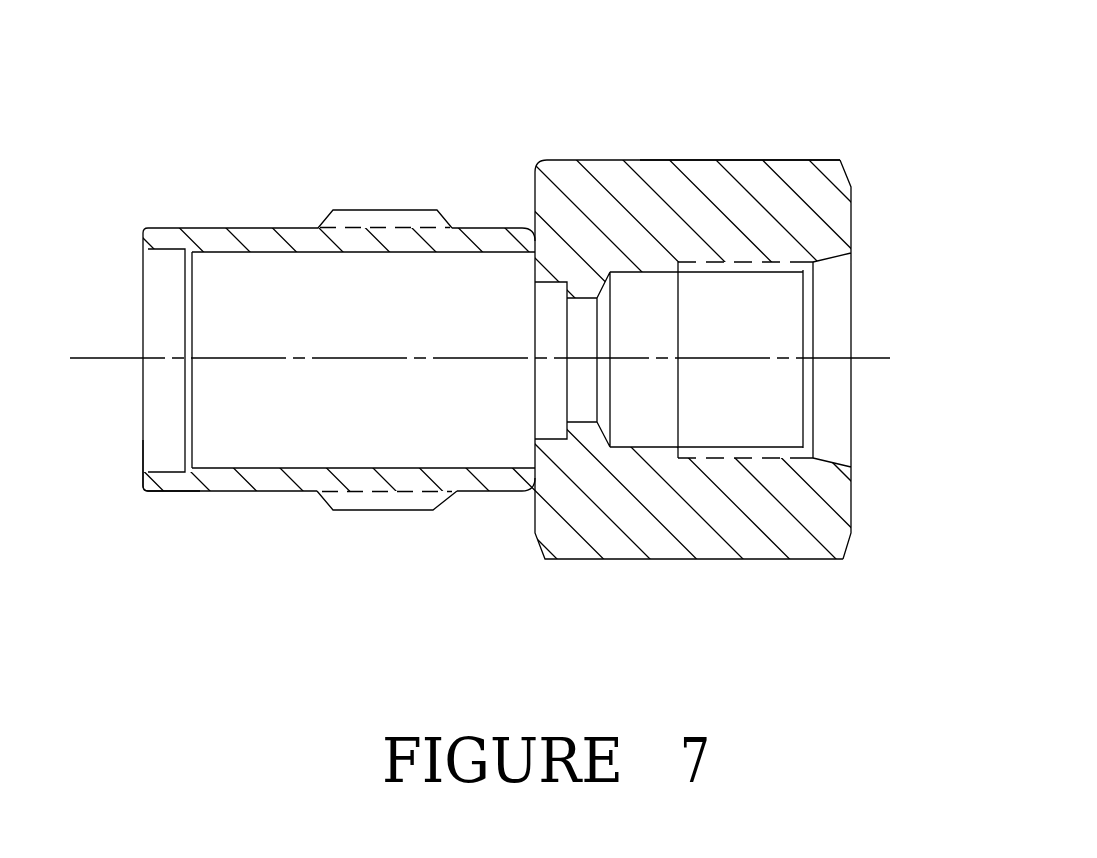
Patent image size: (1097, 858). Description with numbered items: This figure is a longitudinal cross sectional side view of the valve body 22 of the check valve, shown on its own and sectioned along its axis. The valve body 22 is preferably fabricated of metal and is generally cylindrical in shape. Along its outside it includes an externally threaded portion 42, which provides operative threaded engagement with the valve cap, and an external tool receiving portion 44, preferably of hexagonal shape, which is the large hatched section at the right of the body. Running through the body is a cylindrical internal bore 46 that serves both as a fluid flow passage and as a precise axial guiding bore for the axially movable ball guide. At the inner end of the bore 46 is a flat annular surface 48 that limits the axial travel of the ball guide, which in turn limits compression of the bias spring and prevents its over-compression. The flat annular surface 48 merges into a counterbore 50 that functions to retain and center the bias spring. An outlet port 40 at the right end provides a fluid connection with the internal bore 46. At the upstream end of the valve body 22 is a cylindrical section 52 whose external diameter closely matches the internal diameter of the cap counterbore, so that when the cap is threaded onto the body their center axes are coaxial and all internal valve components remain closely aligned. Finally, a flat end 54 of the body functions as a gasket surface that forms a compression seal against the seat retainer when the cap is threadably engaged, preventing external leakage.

The valve body 22 is at (646, 160).
The outlet port 40 is at (851, 304).
The externally threaded portion 42 is at (360, 210).
The external tool receiving portion 44 is at (734, 160).
The cylindrical internal bore 46 is at (447, 468).
The flat annular surface 48 is at (535, 444).
The counterbore 50 is at (535, 308).
The cylindrical section 52 is at (168, 228).
The flat end 54 is at (142, 482).